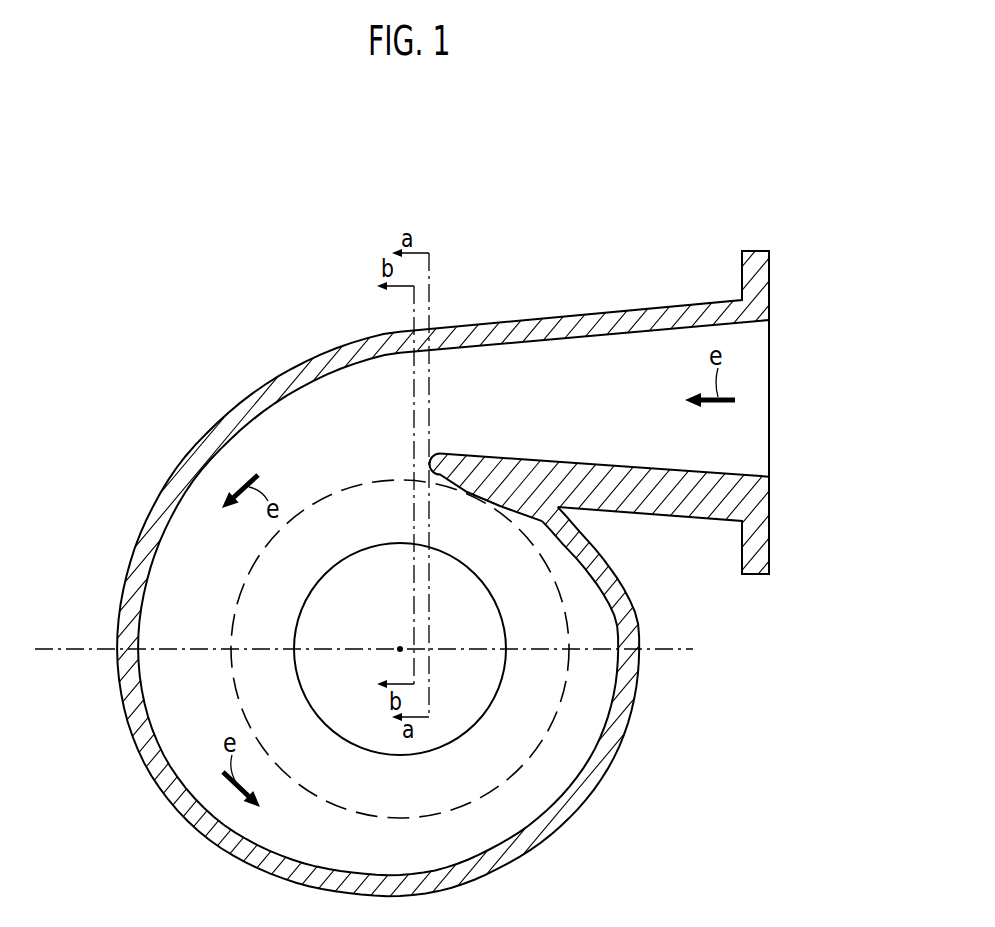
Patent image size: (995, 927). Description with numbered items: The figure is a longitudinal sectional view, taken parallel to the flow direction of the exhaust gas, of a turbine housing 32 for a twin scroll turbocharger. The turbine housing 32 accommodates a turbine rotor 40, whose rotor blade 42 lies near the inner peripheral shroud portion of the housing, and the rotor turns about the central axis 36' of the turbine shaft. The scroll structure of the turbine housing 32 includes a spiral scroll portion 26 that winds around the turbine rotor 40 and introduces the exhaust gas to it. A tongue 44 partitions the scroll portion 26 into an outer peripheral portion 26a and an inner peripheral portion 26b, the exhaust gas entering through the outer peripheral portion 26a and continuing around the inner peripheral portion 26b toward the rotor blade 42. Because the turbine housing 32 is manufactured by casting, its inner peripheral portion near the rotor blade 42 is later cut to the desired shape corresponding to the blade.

The scroll portion 26 is at (594, 363).
The outer peripheral portion 26a is at (566, 410).
The inner peripheral portion 26b is at (211, 596).
The turbine housing 32 is at (129, 359).
The central axis of turbine shaft 36' is at (364, 620).
The turbine rotor 40 is at (478, 723).
The rotor blade 42 is at (476, 803).
The tongue 44 is at (443, 454).